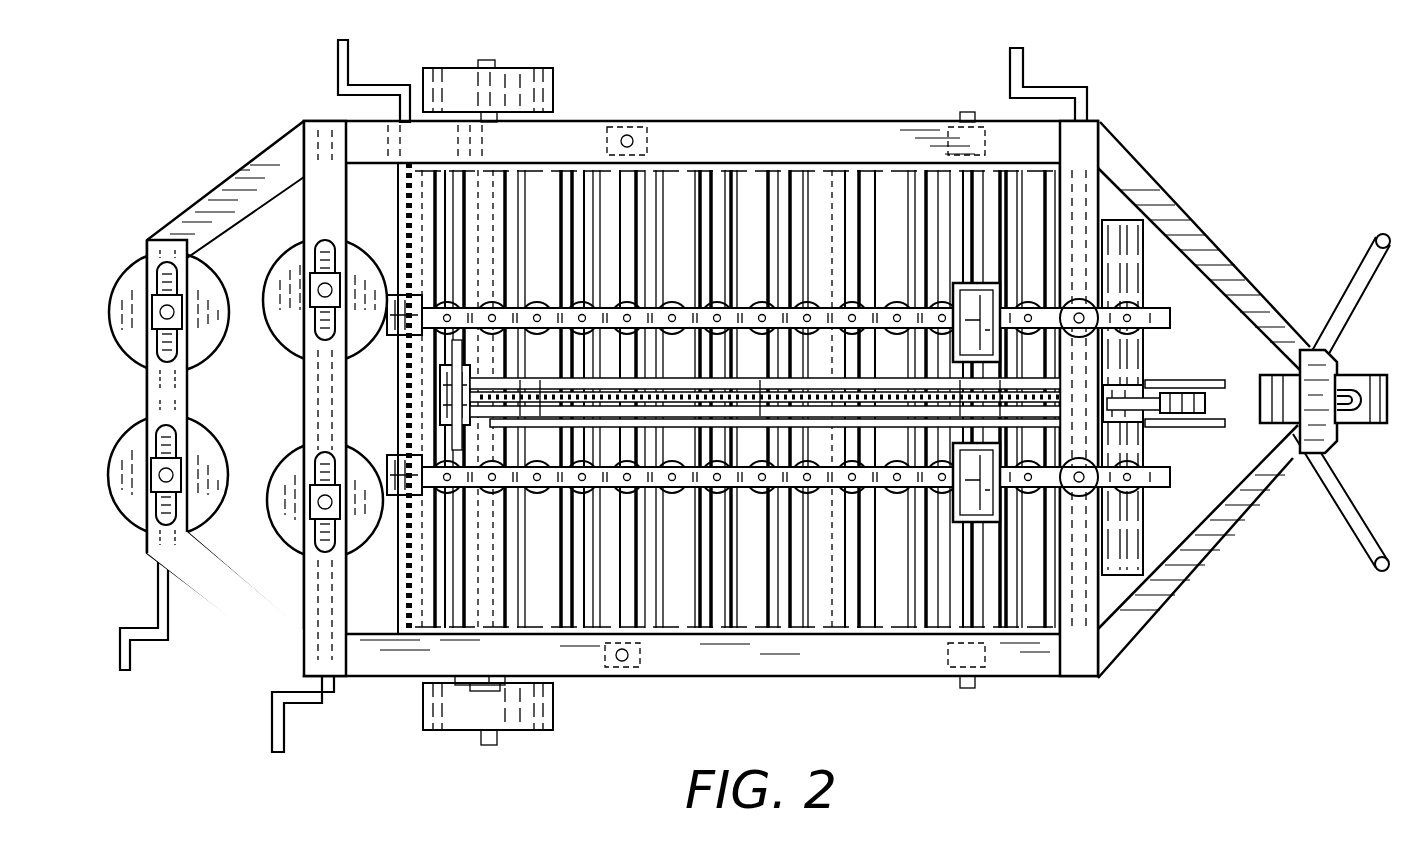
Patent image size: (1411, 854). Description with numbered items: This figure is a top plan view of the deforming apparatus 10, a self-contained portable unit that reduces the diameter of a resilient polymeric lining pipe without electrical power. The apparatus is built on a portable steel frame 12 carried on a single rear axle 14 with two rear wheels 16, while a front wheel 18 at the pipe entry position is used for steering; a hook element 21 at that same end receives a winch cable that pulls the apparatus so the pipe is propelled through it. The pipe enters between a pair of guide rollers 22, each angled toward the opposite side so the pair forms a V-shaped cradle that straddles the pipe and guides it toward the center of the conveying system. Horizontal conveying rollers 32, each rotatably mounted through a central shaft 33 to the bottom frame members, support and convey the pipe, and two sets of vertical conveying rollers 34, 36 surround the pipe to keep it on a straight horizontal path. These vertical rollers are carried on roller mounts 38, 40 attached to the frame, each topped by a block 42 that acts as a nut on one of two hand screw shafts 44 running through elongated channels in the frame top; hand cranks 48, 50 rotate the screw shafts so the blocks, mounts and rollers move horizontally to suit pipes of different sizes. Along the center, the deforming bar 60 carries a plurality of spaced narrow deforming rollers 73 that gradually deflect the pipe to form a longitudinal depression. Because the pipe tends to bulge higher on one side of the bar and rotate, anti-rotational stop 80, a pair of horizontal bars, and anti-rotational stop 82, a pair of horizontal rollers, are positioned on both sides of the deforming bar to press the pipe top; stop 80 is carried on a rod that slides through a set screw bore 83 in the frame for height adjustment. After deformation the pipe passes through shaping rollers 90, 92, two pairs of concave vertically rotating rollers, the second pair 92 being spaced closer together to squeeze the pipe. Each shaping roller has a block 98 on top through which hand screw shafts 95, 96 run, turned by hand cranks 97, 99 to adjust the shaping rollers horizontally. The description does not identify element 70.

The deforming apparatus 10 is at (1120, 140).
The portable steel frame 12 is at (905, 125).
The rear axle 14 is at (510, 740).
The rear wheels 16 is at (440, 728).
The front wheel 18 is at (1365, 376).
The hook element 21 is at (1348, 422).
The guide rollers 22 is at (1363, 530).
The horizontal conveying rollers 32 is at (765, 608).
The central shaft 33 is at (835, 622).
The vertical conveying rollers 34 is at (1150, 312).
The vertical conveying rollers 36 is at (1140, 506).
The roller mount 38 is at (1172, 320).
The roller mount 40 is at (1157, 467).
The block 42 is at (390, 345).
The hand screw shafts 44 is at (402, 206).
The hand crank 48 is at (350, 63).
The hand crank 50 is at (1010, 68).
The deforming bar 60 is at (1195, 380).
The axle hub 70 is at (535, 690).
The deforming rollers 73 is at (1218, 402).
The anti-rotational stop 80 is at (623, 228).
The anti-rotational stop 82 is at (965, 495).
The set screw bore 83 is at (627, 135).
The shaping rollers 90 is at (290, 263).
The shaping rollers 92 is at (125, 435).
The hand screw shaft 95 is at (165, 232).
The hand screw shaft 96 is at (310, 118).
The hand crank 97 is at (116, 650).
The block 98 is at (150, 330).
The hand crank 99 is at (285, 722).